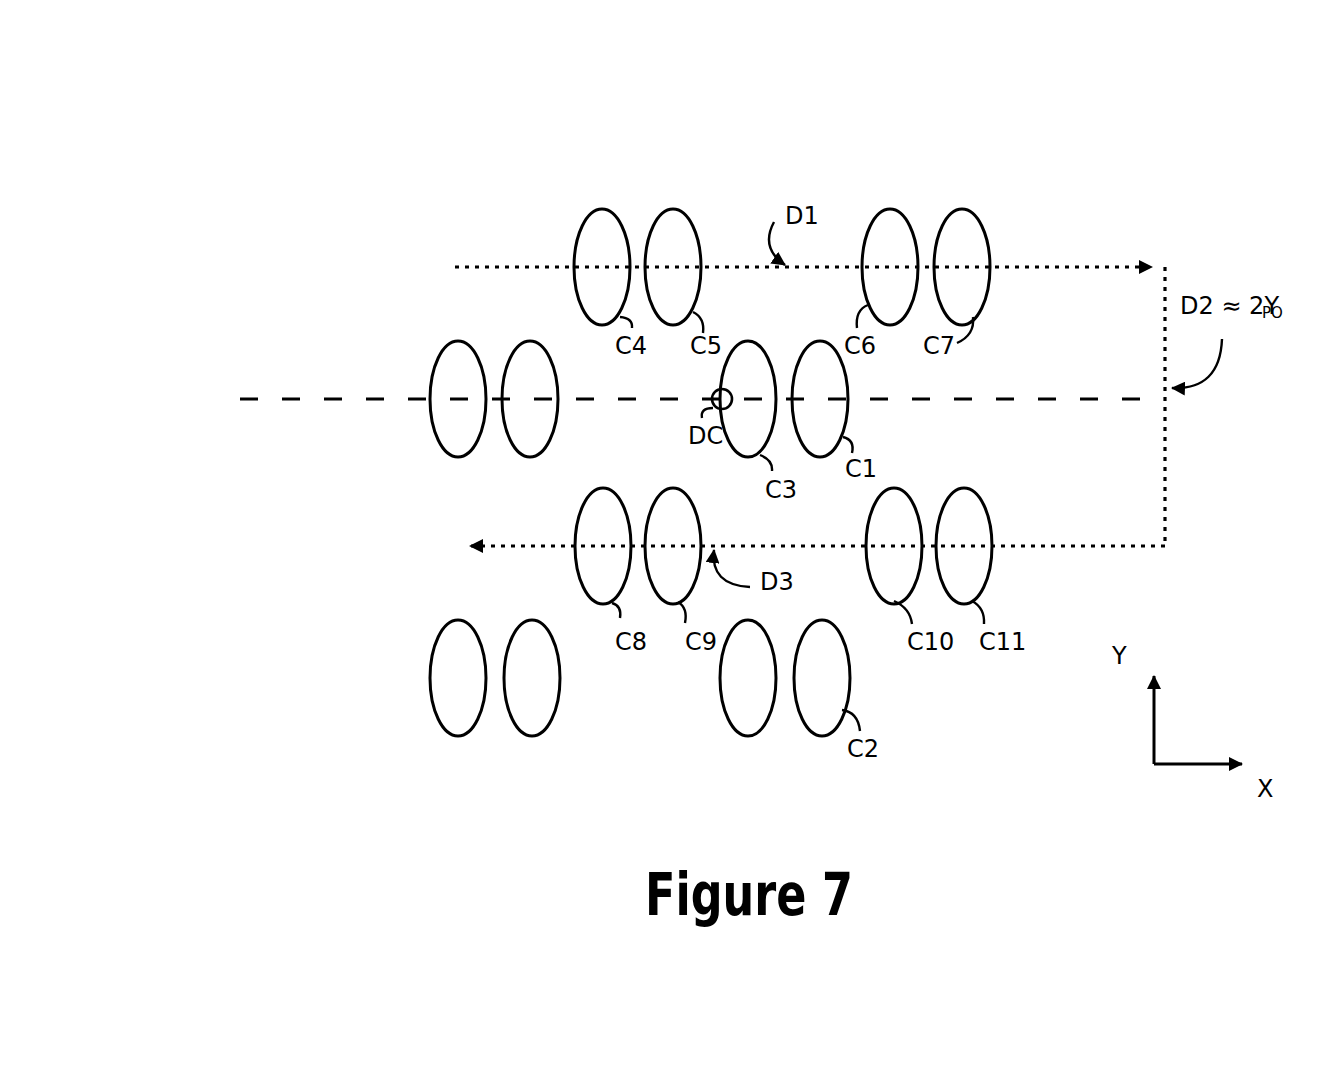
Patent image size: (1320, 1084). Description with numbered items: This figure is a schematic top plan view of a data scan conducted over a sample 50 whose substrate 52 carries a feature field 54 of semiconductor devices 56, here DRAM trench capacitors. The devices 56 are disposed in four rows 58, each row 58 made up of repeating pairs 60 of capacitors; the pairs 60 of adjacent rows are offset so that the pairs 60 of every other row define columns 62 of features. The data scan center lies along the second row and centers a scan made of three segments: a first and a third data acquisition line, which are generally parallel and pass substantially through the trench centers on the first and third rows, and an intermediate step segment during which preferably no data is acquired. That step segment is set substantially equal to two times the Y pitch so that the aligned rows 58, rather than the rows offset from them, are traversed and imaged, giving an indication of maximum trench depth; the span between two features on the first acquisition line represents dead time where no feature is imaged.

The sample 50 is at (1023, 110).
The substrate 52 is at (1038, 656).
The feature field 54 is at (953, 162).
The devices 56 is at (823, 338).
The rows 58 is at (168, 232).
The pairs of capacitors 60 is at (663, 352).
The columns 62 is at (897, 195).